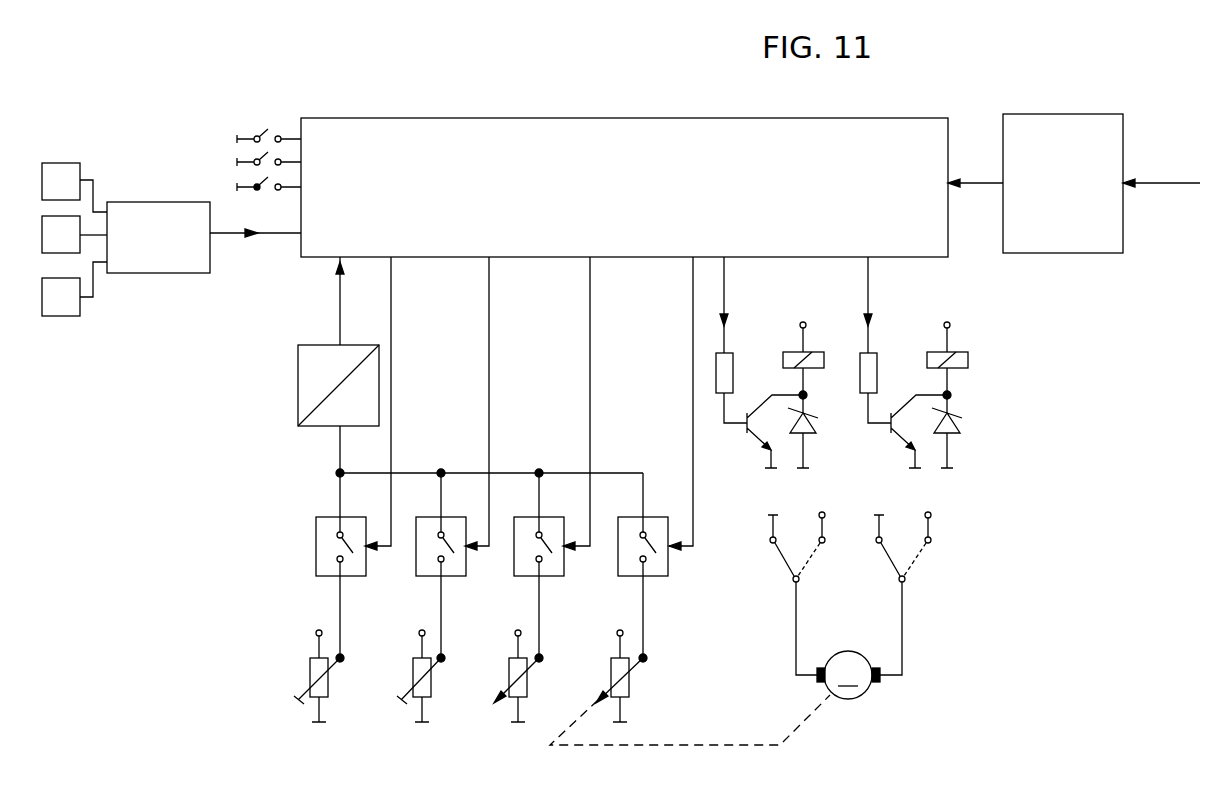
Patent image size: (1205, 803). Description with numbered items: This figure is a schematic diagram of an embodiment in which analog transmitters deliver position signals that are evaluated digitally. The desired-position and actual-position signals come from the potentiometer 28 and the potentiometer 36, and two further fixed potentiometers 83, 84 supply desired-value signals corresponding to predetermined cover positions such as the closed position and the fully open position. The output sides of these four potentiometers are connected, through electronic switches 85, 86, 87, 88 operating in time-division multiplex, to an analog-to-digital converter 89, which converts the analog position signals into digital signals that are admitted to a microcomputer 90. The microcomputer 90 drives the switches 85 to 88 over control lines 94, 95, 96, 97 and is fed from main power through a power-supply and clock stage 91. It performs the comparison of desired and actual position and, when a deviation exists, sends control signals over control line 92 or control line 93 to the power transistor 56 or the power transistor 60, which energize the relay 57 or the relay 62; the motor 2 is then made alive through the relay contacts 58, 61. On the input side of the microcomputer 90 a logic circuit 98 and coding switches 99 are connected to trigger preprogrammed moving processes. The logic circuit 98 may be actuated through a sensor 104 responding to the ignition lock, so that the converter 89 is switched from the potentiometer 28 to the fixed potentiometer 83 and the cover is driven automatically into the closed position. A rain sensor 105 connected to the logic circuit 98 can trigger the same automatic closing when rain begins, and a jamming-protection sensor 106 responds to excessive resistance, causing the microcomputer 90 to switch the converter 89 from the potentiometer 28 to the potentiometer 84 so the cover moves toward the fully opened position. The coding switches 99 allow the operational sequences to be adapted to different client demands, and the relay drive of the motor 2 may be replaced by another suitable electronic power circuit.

The motor 2 is at (857, 690).
The potentiometer 28 is at (526, 686).
The potentiometer 36 is at (629, 686).
The power transistor 56 is at (753, 435).
The relay 57 is at (815, 352).
The relay contact 58 is at (781, 558).
The power transistor 60 is at (897, 435).
The relay contact 61 is at (887, 558).
The relay 62 is at (959, 352).
The potentiometer 83 is at (308, 668).
The potentiometer 84 is at (419, 668).
The electronic switch 85 is at (322, 547).
The electronic switch 86 is at (424, 560).
The electronic switch 87 is at (521, 562).
The electronic switch 88 is at (625, 562).
The analog-to-digital converter 89 is at (300, 388).
The microcomputer 90 is at (539, 128).
The power-supply and clock stage 91 is at (1082, 246).
The control line 92 is at (727, 288).
The control line 93 is at (871, 288).
The control line 94 is at (393, 308).
The control line 95 is at (491, 308).
The control line 96 is at (592, 308).
The control line 97 is at (689, 308).
The logic circuit 98 is at (154, 265).
The coding switches 99 is at (268, 177).
The sensor 104 is at (57, 172).
The rain sensor 105 is at (70, 242).
The jamming-protection sensor 106 is at (62, 308).